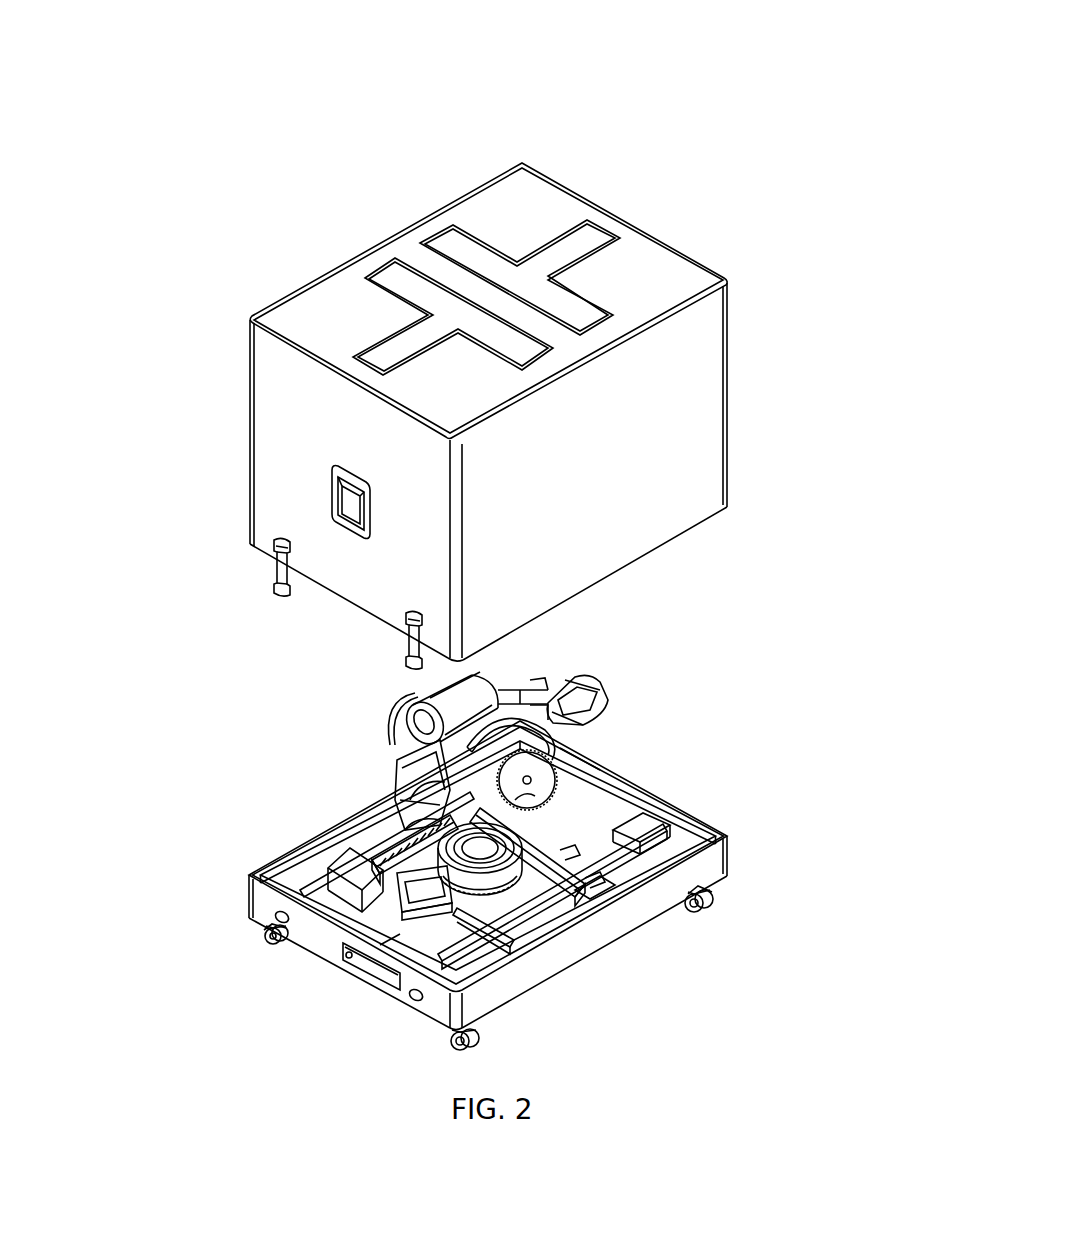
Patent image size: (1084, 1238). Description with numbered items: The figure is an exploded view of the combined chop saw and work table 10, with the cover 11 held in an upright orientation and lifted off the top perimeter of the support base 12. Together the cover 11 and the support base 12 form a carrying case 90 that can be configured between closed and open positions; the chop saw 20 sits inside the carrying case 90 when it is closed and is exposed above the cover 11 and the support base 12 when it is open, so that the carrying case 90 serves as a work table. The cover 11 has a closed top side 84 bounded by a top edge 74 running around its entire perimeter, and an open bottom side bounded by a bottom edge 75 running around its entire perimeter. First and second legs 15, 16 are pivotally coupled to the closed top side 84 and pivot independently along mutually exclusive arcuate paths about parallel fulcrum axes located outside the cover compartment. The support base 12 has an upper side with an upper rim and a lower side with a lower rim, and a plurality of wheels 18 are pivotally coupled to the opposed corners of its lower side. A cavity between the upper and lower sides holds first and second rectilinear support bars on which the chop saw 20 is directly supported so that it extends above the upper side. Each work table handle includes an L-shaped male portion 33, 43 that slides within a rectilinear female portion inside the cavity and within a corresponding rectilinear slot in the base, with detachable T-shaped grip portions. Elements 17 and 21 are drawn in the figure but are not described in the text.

The combined chop saw and work table 10 is at (748, 109).
The cover 11 is at (692, 549).
The support base 12 is at (292, 819).
The first leg 15 is at (398, 283).
The second leg 16 is at (467, 245).
The handle 17 is at (343, 505).
The wheels 18 is at (268, 940).
The chop saw 20 is at (477, 1049).
The caster 21 is at (704, 915).
The L-shaped male portion 33 is at (600, 797).
The L-shaped male portion 43 is at (380, 971).
The top edge 74 is at (303, 290).
The bottom edge 75 is at (607, 578).
The closed top side 84 is at (534, 207).
The carrying case 90 is at (789, 492).